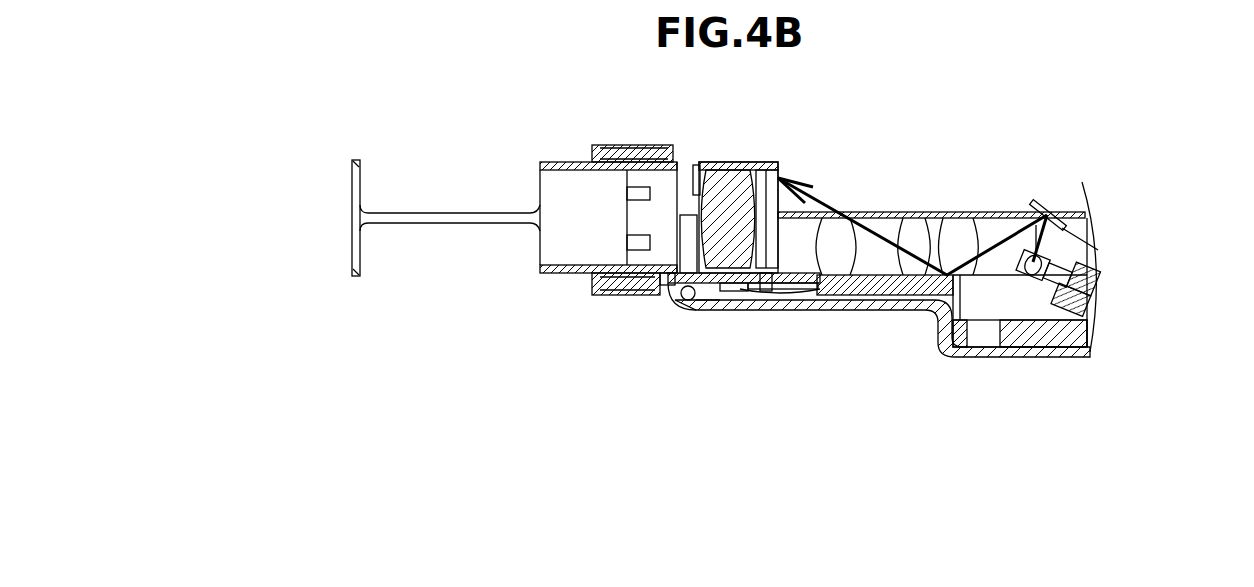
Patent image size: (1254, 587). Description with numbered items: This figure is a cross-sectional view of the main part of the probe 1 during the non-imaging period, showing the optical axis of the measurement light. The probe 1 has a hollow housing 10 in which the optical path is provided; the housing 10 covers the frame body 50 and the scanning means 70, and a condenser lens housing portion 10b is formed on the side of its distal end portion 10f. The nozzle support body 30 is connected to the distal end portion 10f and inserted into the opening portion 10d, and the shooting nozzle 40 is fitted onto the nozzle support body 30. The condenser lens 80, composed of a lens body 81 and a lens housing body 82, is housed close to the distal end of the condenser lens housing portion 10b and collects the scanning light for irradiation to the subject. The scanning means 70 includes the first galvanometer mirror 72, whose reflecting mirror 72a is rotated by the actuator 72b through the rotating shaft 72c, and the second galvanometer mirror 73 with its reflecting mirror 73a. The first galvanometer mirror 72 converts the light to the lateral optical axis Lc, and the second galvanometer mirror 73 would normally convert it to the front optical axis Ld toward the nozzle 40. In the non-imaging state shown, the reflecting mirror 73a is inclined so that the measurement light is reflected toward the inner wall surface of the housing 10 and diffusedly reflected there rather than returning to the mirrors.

The probe 1 is at (465, 136).
The shooting nozzle 40 is at (352, 205).
The nozzle support body 30 is at (610, 296).
The condenser lens 80 is at (740, 159).
The lens body 81 is at (726, 165).
The lens housing body 82 is at (768, 162).
The housing 10 is at (777, 312).
The opening portion 10d is at (668, 292).
The distal end portion 10f is at (733, 312).
The condenser lens housing portion 10b is at (830, 305).
The frame body 50 is at (962, 330).
The scanning means 70 is at (1078, 234).
The second galvanometer mirror 73 is at (1048, 209).
The reflecting mirror 73a is at (1048, 204).
The optical axis Ld is at (973, 213).
The optical axis Lc is at (1098, 248).
The first galvanometer mirror 72 is at (1048, 288).
The reflecting mirror 72a is at (1063, 255).
The actuator 72b is at (1078, 262).
The rotating shaft 72c is at (1095, 292).